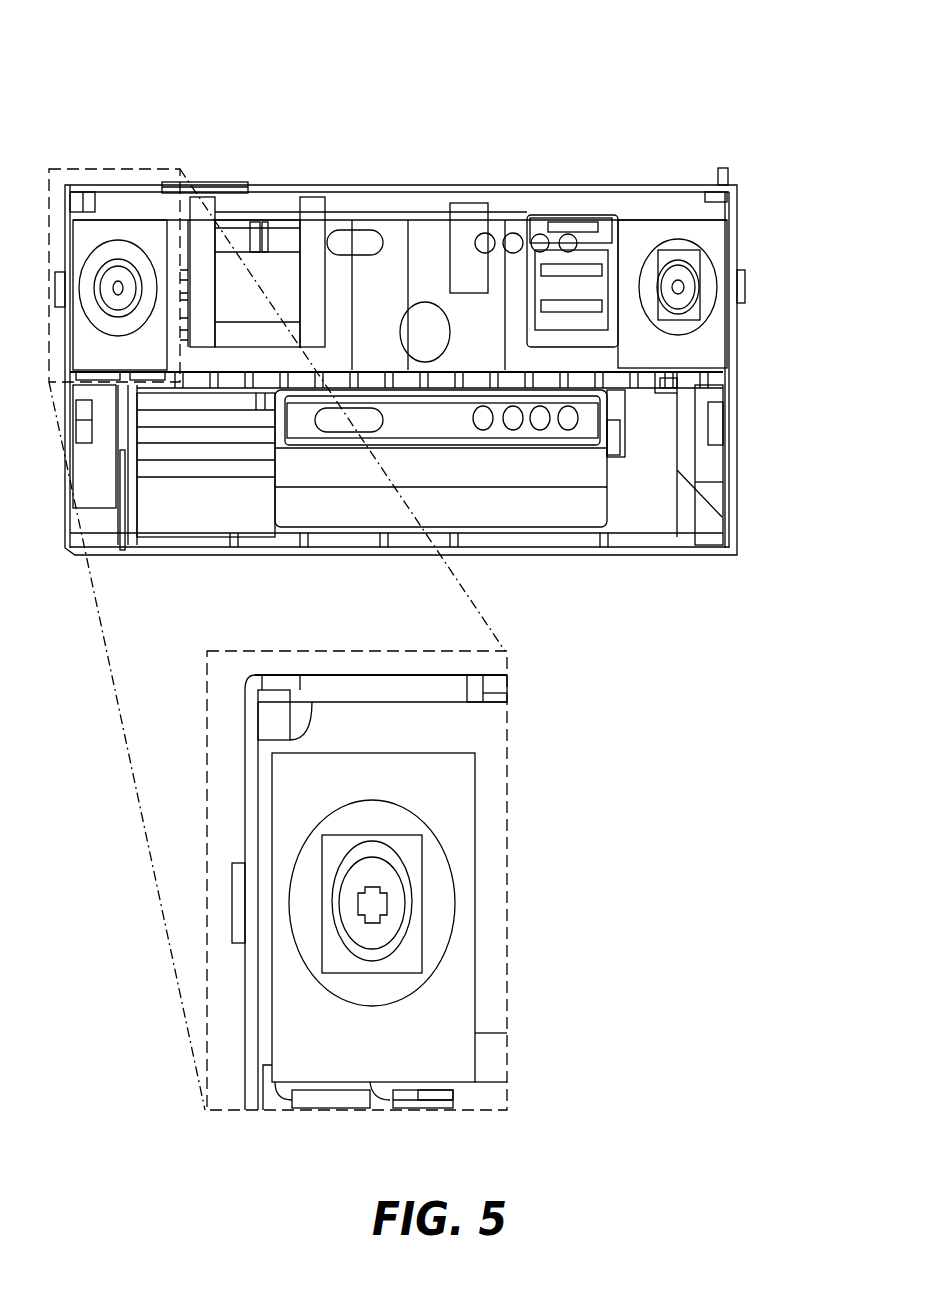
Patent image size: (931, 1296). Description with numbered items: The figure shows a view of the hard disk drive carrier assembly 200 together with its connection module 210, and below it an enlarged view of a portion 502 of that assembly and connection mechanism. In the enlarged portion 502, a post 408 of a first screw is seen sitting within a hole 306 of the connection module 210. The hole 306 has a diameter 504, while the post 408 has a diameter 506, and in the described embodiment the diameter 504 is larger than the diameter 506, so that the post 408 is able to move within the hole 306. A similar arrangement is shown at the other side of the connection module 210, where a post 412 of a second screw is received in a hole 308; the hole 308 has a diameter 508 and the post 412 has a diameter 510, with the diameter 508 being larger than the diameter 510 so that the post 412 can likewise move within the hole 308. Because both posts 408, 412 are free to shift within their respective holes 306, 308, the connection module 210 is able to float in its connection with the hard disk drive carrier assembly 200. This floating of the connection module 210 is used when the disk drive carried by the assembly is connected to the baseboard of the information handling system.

The hard disk drive carrier assembly 200 is at (750, 104).
The connection module 210 is at (754, 264).
The portion 502 is at (121, 168).
The post 412 is at (655, 300).
The diameter 508 is at (660, 258).
The hole 308 is at (692, 287).
The diameter 510 is at (676, 332).
The diameter 504 is at (380, 836).
The post 408 is at (406, 906).
The hole 306 is at (392, 904).
The diameter 506 is at (380, 975).